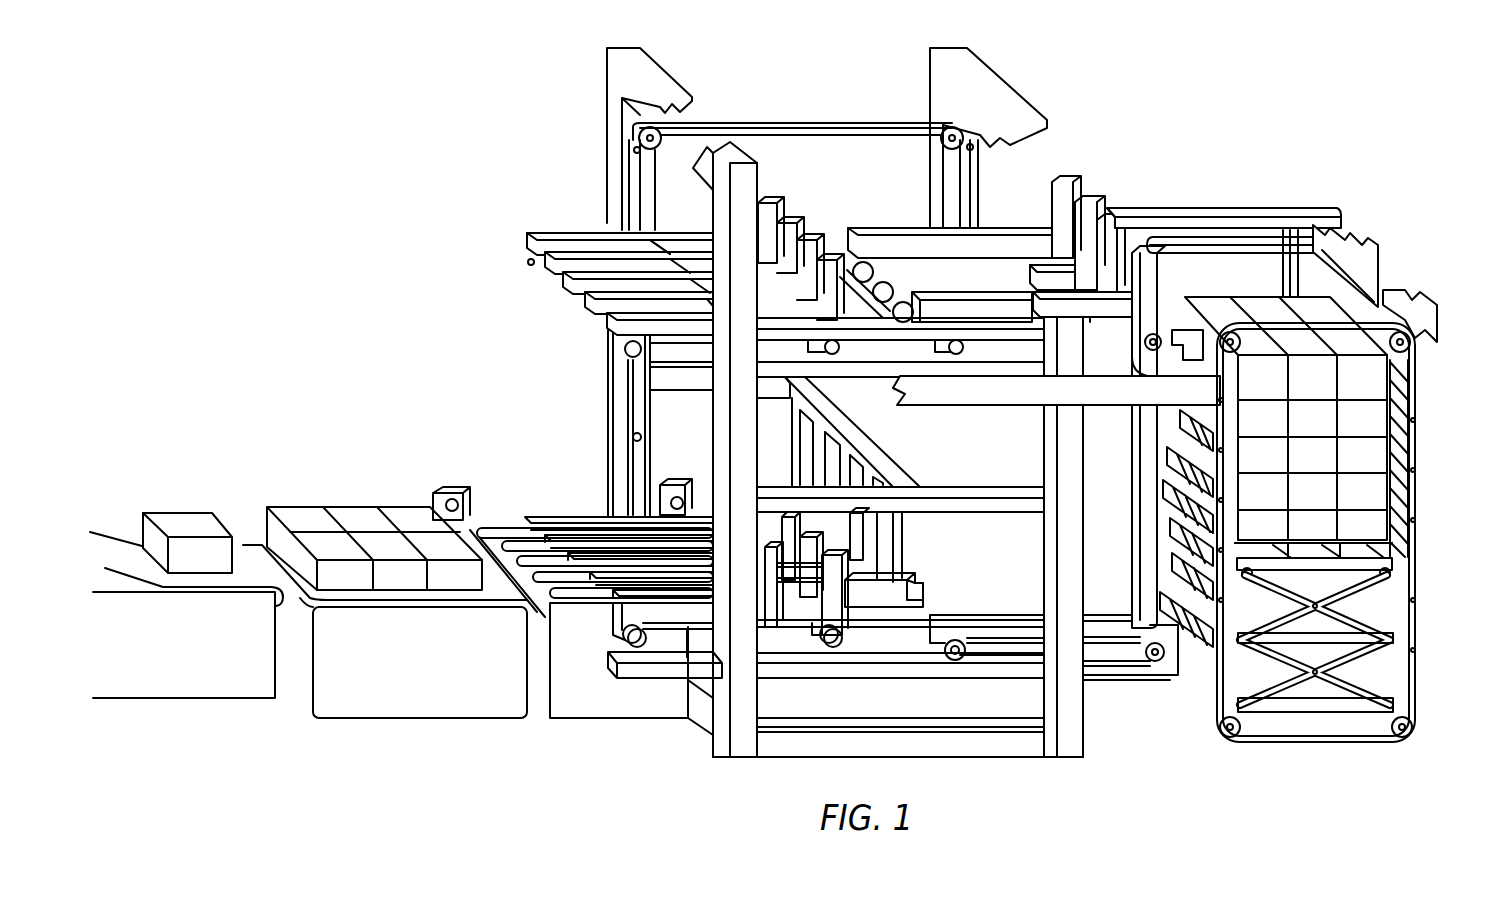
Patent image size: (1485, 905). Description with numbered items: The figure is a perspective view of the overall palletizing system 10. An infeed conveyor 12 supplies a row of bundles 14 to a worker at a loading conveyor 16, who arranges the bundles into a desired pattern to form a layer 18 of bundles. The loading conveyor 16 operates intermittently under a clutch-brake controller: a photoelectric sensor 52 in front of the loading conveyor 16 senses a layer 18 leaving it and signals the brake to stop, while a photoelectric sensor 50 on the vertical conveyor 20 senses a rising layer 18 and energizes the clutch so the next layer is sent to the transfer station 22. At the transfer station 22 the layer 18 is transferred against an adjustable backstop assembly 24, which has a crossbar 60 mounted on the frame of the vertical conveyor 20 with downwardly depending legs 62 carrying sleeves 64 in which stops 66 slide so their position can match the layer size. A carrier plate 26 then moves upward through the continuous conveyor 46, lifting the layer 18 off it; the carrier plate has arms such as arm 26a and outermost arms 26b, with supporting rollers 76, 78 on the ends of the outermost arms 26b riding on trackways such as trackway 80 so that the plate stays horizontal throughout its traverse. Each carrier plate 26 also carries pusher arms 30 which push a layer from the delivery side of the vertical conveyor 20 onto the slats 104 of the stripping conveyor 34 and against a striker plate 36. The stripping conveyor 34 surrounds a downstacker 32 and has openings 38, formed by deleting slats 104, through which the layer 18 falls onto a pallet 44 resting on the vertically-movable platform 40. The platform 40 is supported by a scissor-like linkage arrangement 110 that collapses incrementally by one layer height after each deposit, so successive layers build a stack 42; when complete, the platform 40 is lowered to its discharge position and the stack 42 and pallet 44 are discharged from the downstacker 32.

The palletizing system 10 is at (405, 318).
The infeed conveyor 12 is at (190, 654).
The bundles 14 is at (164, 528).
The loading conveyor 16 is at (440, 666).
The layer of bundles 18 is at (312, 508).
The vertical conveyor 20 is at (686, 88).
The transfer station 22 is at (552, 515).
The adjustable backstop assembly 24 is at (900, 542).
The carrier plates 26 is at (543, 284).
The carrier plate arm 26a is at (656, 250).
The outermost arms 26b is at (546, 240).
The pusher arms 30 is at (784, 215).
The downstacker 32 is at (1232, 214).
The stripping conveyor 34 is at (1420, 640).
The striker plate 36 is at (1380, 264).
The openings 38 is at (998, 222).
The vertically-movable platform 40 is at (1293, 576).
The stack 42 is at (1375, 418).
The pallet 44 is at (1390, 548).
The continuous conveyor 46 is at (598, 656).
The photoelectric sensor 50 is at (666, 486).
The photoelectric sensor 52 is at (461, 490).
The crossbar 60 is at (878, 452).
The legs 62 is at (798, 442).
The sleeves 64 is at (878, 603).
The stops 66 is at (770, 588).
The supporting roller 76 is at (960, 660).
The supporting roller 78 is at (1156, 663).
The trackway 80 is at (893, 655).
The slats 104 is at (1402, 518).
The scissor-like linkage arrangement 110 is at (1290, 624).